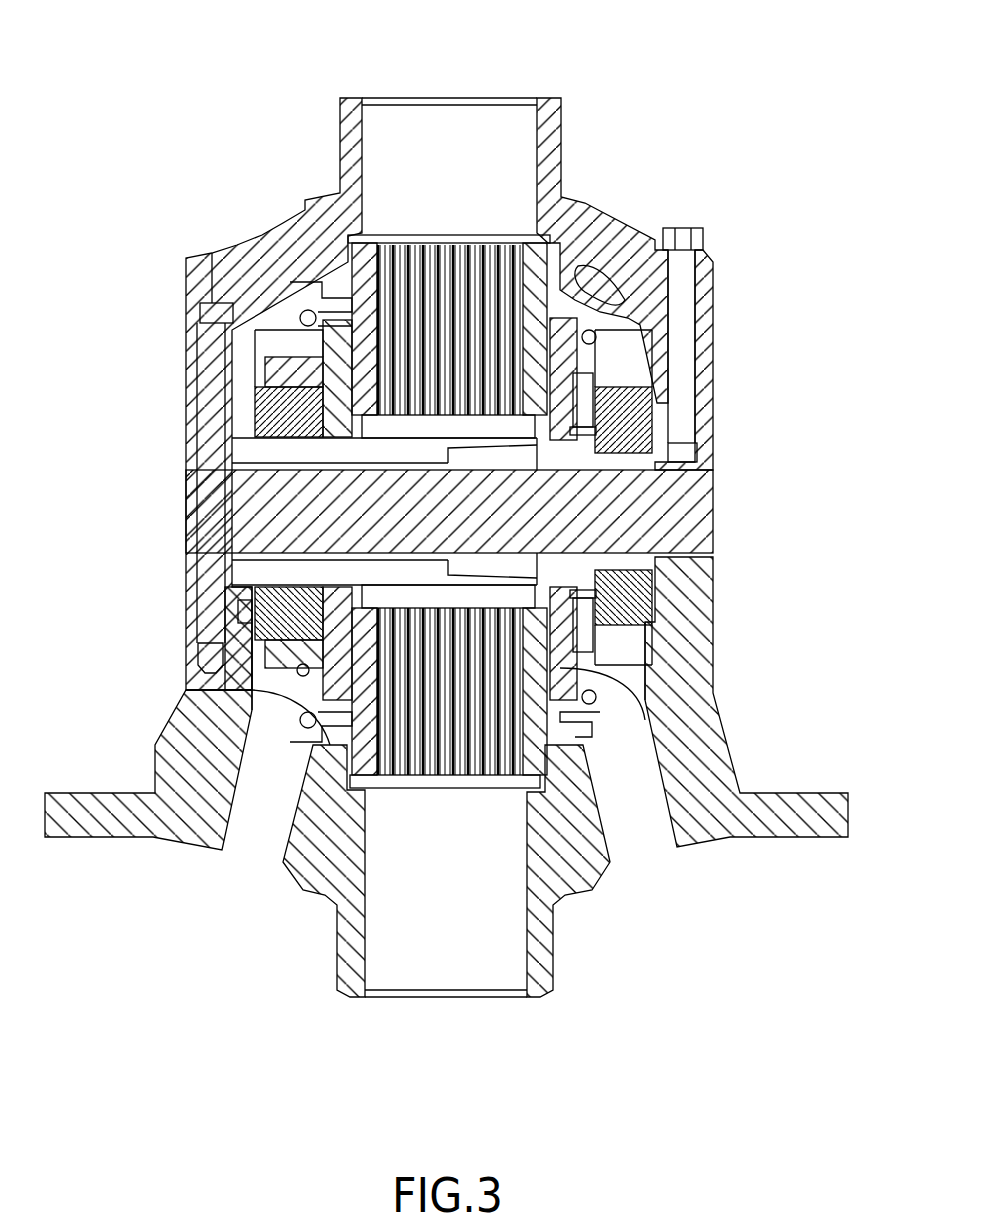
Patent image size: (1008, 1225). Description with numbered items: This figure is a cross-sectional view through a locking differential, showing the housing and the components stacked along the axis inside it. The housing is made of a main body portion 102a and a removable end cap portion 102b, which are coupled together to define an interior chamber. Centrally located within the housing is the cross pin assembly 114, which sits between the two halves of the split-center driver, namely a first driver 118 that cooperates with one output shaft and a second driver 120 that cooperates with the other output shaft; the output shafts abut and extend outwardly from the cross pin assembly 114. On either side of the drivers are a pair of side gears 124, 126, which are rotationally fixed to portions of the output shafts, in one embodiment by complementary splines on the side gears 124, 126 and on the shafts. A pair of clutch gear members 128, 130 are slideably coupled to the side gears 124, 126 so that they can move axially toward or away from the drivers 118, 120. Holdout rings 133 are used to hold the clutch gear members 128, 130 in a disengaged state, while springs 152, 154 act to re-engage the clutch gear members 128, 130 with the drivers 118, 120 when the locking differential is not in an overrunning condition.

The main body portion 102a is at (730, 762).
The removable end cap portion 102b is at (617, 227).
The cross pin assembly 114 is at (690, 512).
The first driver 118 is at (647, 580).
The second driver 120 is at (625, 425).
The side gear 124 is at (455, 780).
The side gear 126 is at (440, 240).
The clutch gear member 128 is at (610, 660).
The clutch gear member 130 is at (620, 340).
The holdout ring 133 is at (583, 393).
The spring 152 is at (305, 720).
The spring 154 is at (305, 310).